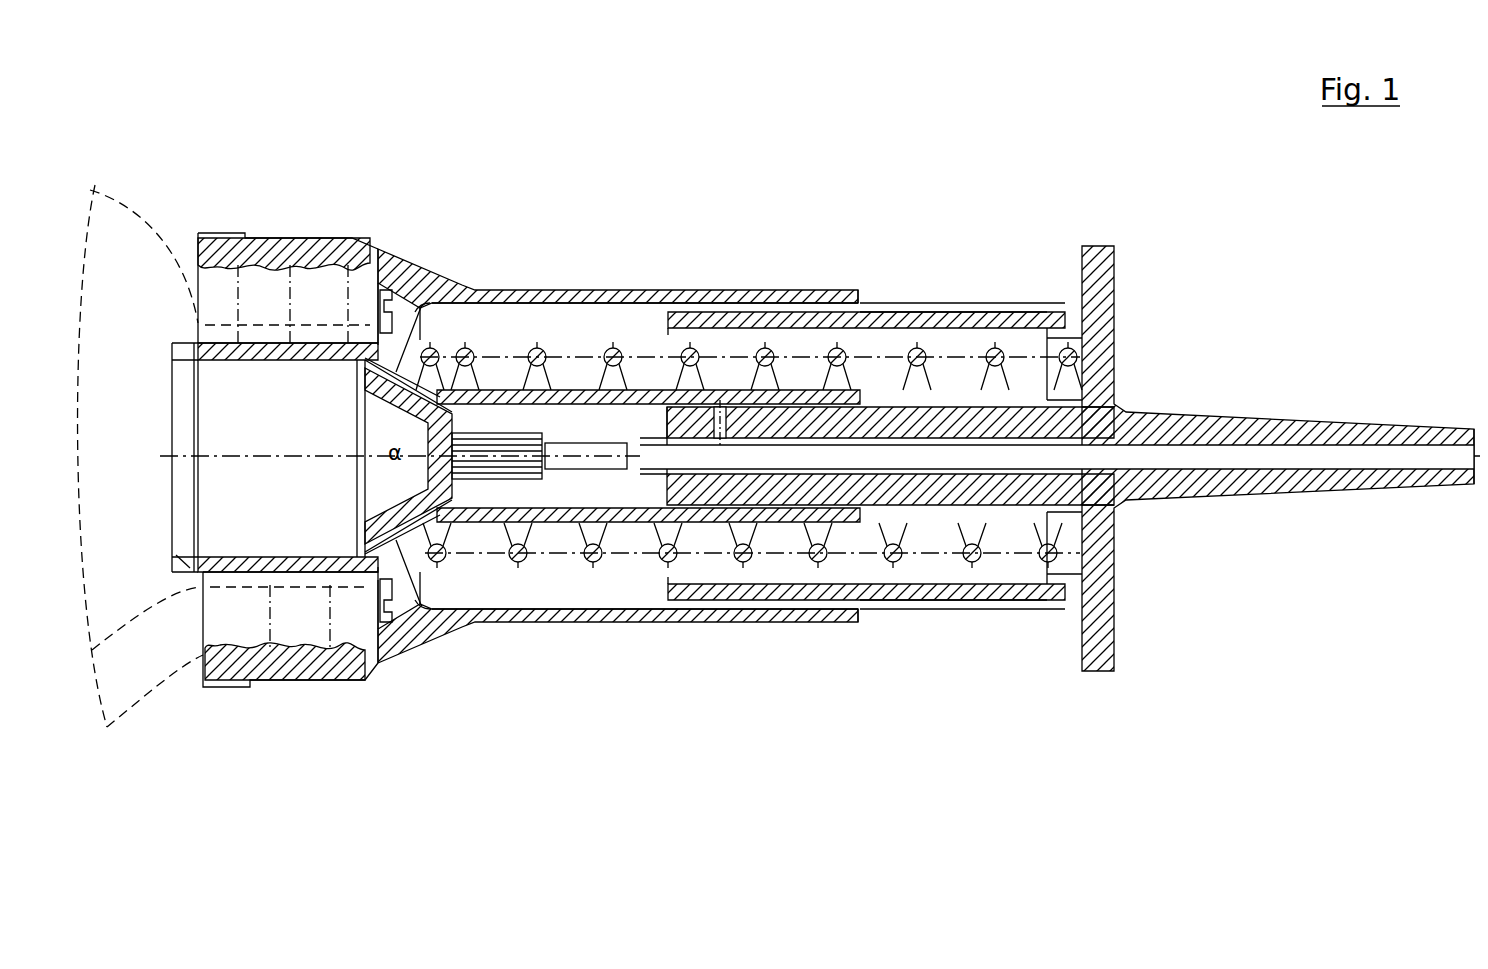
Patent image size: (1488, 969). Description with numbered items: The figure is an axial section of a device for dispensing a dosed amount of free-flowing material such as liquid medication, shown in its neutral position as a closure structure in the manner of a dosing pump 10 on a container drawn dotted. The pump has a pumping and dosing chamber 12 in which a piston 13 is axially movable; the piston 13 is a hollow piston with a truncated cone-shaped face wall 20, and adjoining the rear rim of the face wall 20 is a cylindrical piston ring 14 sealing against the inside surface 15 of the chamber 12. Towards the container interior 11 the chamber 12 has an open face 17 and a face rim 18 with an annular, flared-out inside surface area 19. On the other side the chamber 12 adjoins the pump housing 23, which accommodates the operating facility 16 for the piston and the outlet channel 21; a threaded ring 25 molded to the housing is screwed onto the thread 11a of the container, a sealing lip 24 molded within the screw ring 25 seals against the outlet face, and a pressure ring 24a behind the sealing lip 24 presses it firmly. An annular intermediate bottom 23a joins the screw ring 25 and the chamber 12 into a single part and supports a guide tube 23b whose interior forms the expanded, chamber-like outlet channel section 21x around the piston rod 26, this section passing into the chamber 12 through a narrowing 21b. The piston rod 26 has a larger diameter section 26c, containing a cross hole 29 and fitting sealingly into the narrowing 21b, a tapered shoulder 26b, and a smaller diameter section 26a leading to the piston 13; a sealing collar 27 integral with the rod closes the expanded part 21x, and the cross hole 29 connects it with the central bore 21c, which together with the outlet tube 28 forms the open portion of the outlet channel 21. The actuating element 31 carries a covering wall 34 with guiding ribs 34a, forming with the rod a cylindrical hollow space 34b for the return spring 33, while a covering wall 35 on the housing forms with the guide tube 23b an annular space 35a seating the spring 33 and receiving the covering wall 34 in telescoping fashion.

The dosing pump 10 is at (963, 270).
The container interior 11 is at (140, 456).
The thread 11a is at (297, 630).
The pumping and dosing chamber 12 is at (273, 383).
The piston 13 is at (383, 497).
The piston ring 14 is at (358, 547).
The inside surface 15 is at (257, 557).
The operating facility 16 is at (978, 345).
The open face 17 is at (170, 385).
The face rim 18 is at (194, 565).
The flared-out inside surface area 19 is at (183, 557).
The face wall 20 is at (409, 600).
The outlet channel 21 is at (757, 453).
The narrowing 21b is at (477, 505).
The central bore 21c is at (1114, 449).
The outlet channel section 21x is at (572, 502).
The pump housing 23 is at (437, 262).
The intermediate bottom 23a is at (447, 278).
The guide tube 23b is at (576, 428).
The sealing lip 24 is at (376, 300).
The pressure ring 24a is at (408, 330).
The threaded ring 25 is at (228, 243).
The piston rod 26 is at (880, 400).
The smaller diameter section 26a is at (555, 393).
The tapered shoulder 26b is at (668, 407).
The larger diameter section 26c is at (718, 415).
The sealing collar 27 is at (783, 397).
The outlet tube 28 is at (1278, 427).
The cross hole 29 is at (698, 403).
The actuating element 31 is at (1100, 316).
The return spring 33 is at (817, 557).
The covering wall 34 is at (955, 588).
The guiding ribs 34a is at (893, 602).
The cylindrical hollow space 34b is at (1015, 560).
The covering wall 35 is at (725, 620).
The annular space 35a is at (503, 318).